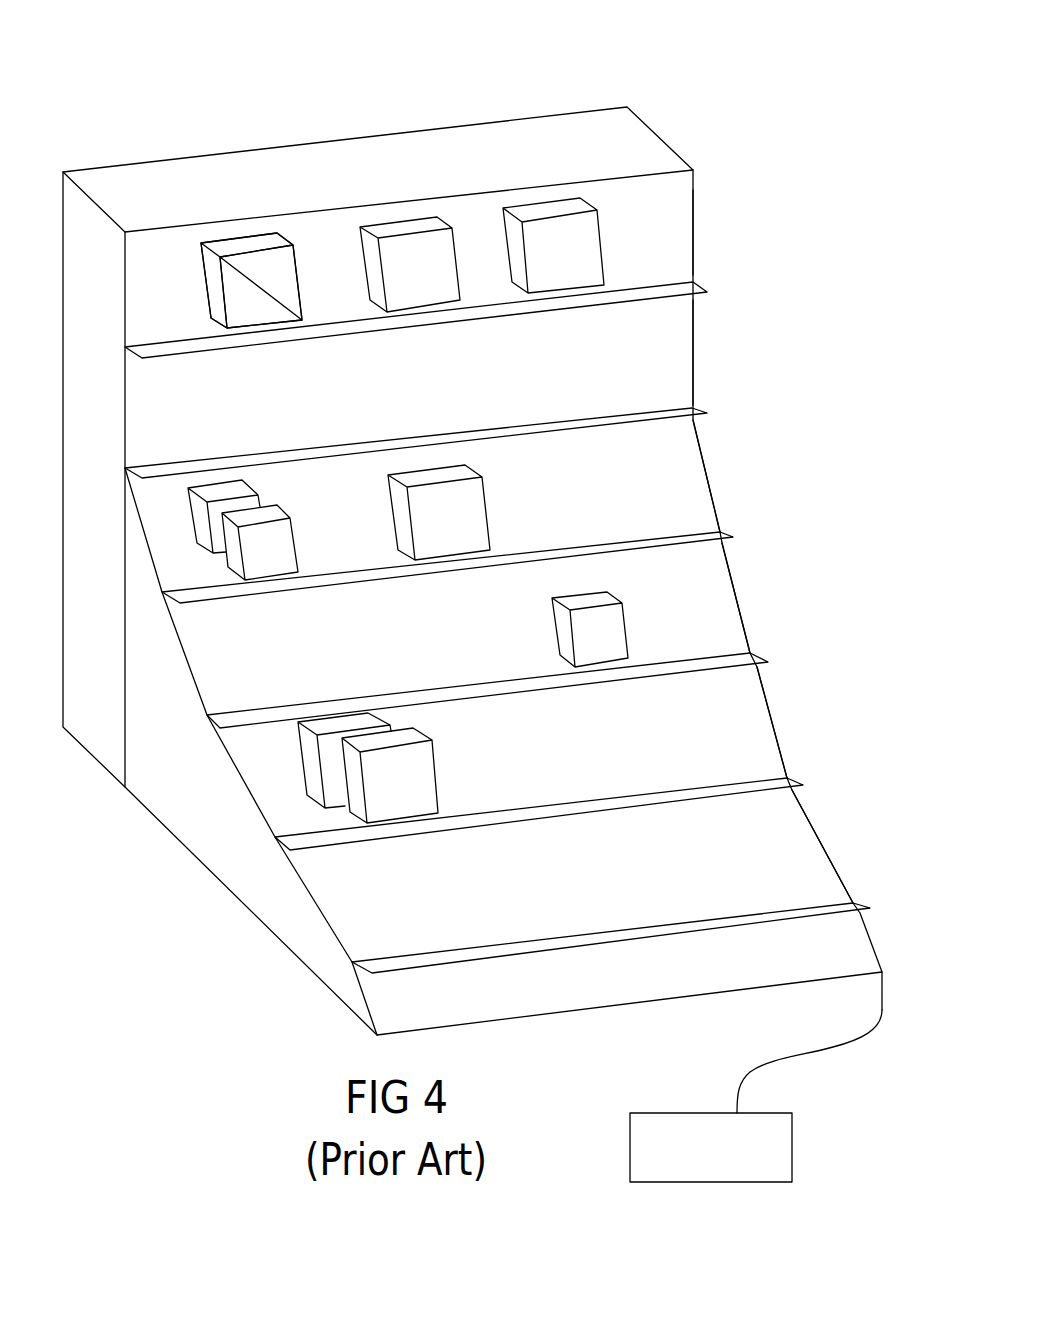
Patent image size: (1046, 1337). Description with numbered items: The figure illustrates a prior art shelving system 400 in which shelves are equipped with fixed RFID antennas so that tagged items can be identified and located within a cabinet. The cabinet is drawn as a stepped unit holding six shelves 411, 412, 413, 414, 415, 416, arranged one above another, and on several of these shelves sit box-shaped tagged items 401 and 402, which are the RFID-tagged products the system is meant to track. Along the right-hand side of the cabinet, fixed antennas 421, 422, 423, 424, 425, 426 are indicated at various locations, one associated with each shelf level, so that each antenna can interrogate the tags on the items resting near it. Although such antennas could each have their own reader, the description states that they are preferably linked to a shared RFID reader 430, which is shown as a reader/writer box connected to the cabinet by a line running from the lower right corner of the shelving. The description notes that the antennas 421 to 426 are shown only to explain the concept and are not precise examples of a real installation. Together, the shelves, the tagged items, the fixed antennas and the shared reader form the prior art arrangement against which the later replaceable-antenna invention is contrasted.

The system 400 is at (757, 126).
The tagged item 401 is at (298, 738).
The tagged item 402 is at (188, 497).
The shelf 411 is at (368, 334).
The shelf 412 is at (593, 429).
The shelf 413 is at (462, 572).
The shelf 414 is at (592, 686).
The shelf 415 is at (466, 831).
The shelf 416 is at (702, 932).
The fixed antenna 421 is at (693, 232).
The fixed antenna 422 is at (693, 357).
The fixed antenna 423 is at (707, 478).
The fixed antenna 424 is at (735, 590).
The fixed antenna 425 is at (770, 713).
The fixed antenna 426 is at (822, 842).
The RFID reader 430 is at (792, 1147).